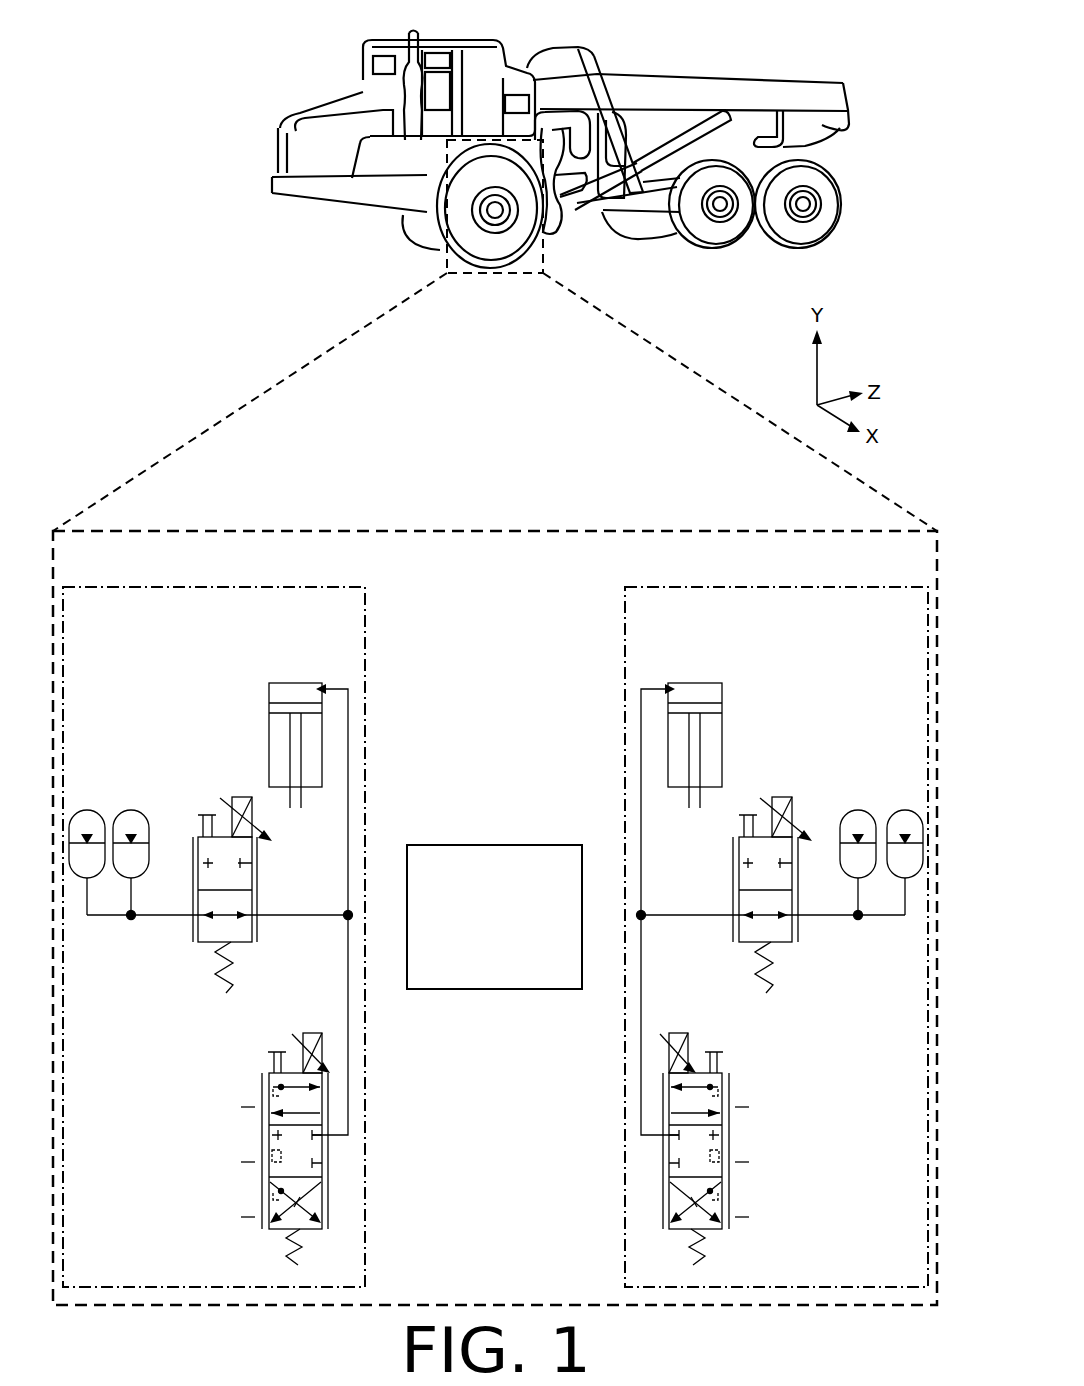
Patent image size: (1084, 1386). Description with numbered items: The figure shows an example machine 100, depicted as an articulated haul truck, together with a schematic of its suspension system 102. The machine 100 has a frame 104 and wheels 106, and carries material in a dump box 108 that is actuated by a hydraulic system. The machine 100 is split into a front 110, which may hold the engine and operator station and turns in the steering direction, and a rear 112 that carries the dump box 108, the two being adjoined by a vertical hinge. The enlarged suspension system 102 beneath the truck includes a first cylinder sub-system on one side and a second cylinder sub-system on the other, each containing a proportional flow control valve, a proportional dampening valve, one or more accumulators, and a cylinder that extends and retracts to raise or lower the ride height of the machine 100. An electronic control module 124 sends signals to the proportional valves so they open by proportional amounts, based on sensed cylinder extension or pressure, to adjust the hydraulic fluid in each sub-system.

The machine 100 is at (266, 26).
The suspension system 102 is at (622, 563).
The frame 104 is at (572, 207).
The wheels 106 is at (842, 203).
The dump box 108 is at (843, 84).
The front 110 is at (262, 153).
The rear 112 is at (868, 133).
The electronic control module (ECM) 124 is at (479, 971).